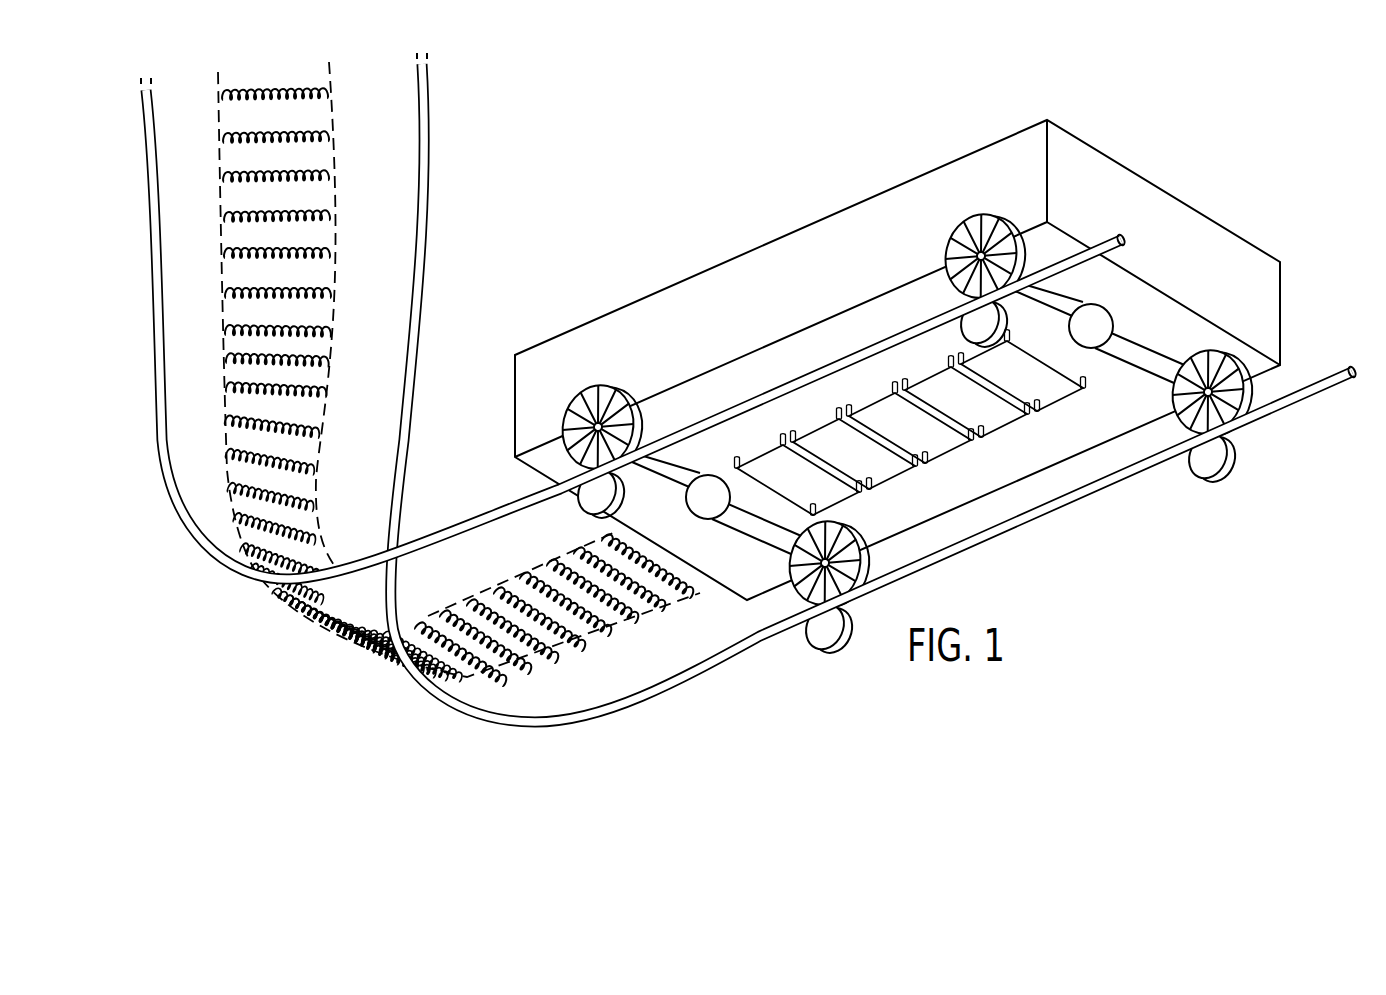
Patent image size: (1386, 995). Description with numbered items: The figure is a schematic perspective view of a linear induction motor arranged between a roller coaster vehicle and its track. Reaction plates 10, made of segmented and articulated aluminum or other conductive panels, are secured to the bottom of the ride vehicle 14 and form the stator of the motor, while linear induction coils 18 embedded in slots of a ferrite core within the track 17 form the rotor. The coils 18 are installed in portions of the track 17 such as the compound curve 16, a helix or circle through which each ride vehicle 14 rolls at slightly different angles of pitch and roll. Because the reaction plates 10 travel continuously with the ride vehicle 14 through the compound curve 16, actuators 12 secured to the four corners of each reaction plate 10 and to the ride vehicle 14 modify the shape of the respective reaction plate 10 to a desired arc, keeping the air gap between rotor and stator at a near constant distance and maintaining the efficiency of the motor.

The reaction plates 10 is at (1052, 418).
The actuators 12 is at (1081, 388).
The ride vehicle 14 is at (702, 190).
The compound curve 16 is at (220, 585).
The track 17 is at (752, 645).
The linear induction coils 18 is at (634, 638).